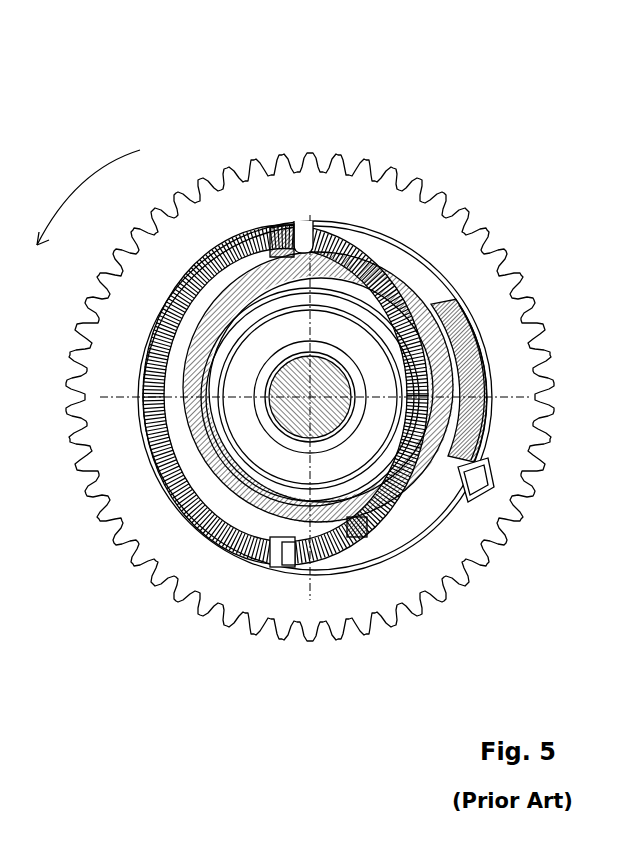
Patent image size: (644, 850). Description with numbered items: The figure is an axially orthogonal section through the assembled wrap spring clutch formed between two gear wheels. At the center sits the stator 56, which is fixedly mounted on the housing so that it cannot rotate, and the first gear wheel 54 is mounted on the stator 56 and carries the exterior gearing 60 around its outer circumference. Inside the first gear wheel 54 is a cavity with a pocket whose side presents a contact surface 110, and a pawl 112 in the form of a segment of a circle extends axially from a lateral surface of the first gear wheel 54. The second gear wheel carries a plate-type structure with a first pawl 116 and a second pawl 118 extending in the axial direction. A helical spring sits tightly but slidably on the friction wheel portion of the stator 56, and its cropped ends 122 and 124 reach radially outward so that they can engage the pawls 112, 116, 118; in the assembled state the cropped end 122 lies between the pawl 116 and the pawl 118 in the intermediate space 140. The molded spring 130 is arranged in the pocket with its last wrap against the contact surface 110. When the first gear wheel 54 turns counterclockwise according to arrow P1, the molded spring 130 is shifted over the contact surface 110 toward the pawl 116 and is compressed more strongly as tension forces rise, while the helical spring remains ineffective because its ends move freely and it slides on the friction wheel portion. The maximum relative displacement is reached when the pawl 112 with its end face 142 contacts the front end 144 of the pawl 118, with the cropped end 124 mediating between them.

The first gear wheel 54 is at (230, 213).
The stator 56 is at (263, 408).
The exterior gearing 60 is at (460, 230).
The contact surface 110 is at (468, 500).
The pawl 112 is at (230, 540).
The first pawl 116 is at (380, 220).
The second pawl 118 is at (420, 562).
The cropped end 122 is at (283, 222).
The cropped end 124 is at (282, 562).
The molded spring 130 is at (498, 325).
The intermediate space 140 is at (305, 242).
The end face 142 is at (273, 562).
The front end 144 is at (308, 580).
The arrow P1 is at (88, 197).